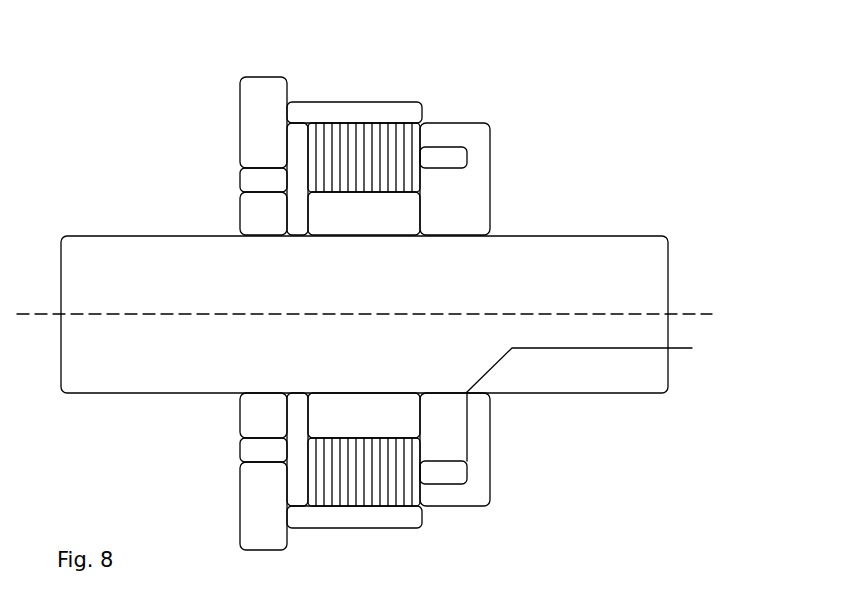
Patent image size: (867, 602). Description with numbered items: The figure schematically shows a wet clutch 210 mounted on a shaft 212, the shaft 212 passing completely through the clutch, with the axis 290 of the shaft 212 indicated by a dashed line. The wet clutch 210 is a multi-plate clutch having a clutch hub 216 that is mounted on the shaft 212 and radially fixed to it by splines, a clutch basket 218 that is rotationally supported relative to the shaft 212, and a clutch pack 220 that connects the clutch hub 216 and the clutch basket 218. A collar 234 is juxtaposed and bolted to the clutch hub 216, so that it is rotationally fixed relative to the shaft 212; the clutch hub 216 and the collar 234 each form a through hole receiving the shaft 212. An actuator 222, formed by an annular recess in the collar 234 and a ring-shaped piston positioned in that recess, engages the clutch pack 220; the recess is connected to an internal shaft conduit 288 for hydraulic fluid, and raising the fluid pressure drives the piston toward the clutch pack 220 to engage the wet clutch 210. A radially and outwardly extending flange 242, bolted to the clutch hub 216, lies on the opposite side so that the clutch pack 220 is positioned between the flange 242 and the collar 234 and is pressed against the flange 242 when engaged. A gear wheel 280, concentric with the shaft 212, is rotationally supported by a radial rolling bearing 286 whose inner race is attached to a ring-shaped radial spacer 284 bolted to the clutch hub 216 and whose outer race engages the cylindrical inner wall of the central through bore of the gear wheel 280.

The wet clutch 210 is at (395, 100).
The shaft 212 is at (620, 236).
The clutch hub 216 is at (325, 223).
The clutch basket 218 is at (297, 113).
The clutch pack 220 is at (328, 167).
The actuator 222 is at (452, 474).
The collar 234 is at (477, 461).
The flange 242 is at (295, 155).
The gear wheel 280 is at (263, 492).
The radial spacer 284 is at (263, 417).
The radial rolling bearing 286 is at (263, 455).
The internal shaft conduit 288 is at (563, 349).
The axis 290 is at (702, 310).